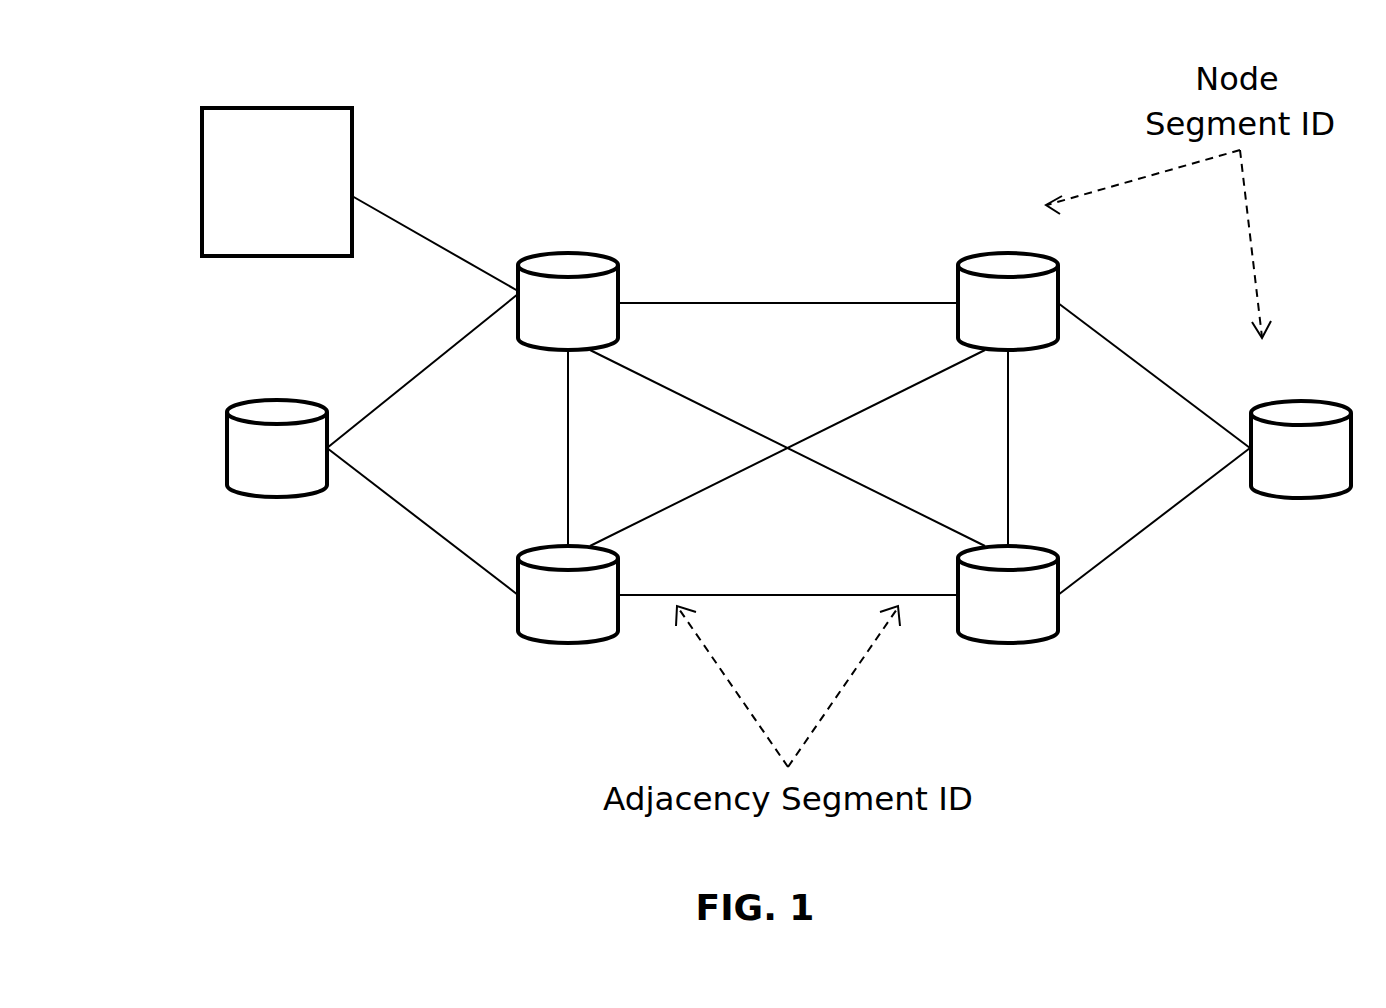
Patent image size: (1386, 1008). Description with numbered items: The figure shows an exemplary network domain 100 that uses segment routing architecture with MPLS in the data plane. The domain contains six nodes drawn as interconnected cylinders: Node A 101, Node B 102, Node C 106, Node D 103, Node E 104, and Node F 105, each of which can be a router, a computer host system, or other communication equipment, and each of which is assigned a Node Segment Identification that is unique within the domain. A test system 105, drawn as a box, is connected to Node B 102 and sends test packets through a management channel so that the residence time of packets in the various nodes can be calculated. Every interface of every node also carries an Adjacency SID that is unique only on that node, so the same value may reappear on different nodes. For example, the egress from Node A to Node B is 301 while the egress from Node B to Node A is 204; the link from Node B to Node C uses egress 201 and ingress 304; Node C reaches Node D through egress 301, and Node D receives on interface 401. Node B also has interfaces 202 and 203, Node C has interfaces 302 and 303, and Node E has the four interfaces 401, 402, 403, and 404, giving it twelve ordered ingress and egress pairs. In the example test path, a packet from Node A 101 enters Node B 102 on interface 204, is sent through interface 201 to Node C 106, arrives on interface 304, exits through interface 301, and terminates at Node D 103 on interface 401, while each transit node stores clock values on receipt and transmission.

The network domain 100 is at (972, 50).
The test system 105 is at (268, 102).
The Node A 101 is at (277, 399).
The Node B 102 is at (568, 254).
The Node C 106 is at (1008, 254).
The Node D 103 is at (1301, 400).
The Node E 104 is at (568, 648).
The adjacency SID 201 is at (847, 391).
The adjacency SID 202 is at (916, 486).
The adjacency SID 203 is at (717, 470).
The adjacency SID 204 is at (704, 419).
The adjacency SID 301 is at (788, 369).
The adjacency SID 302 is at (695, 472).
The adjacency SID 303 is at (788, 448).
The adjacency SID 304 is at (902, 289).
The adjacency SID 401 is at (874, 450).
The adjacency SID 402 is at (920, 510).
The adjacency SID 403 is at (788, 573).
The adjacency SID 404 is at (436, 593).